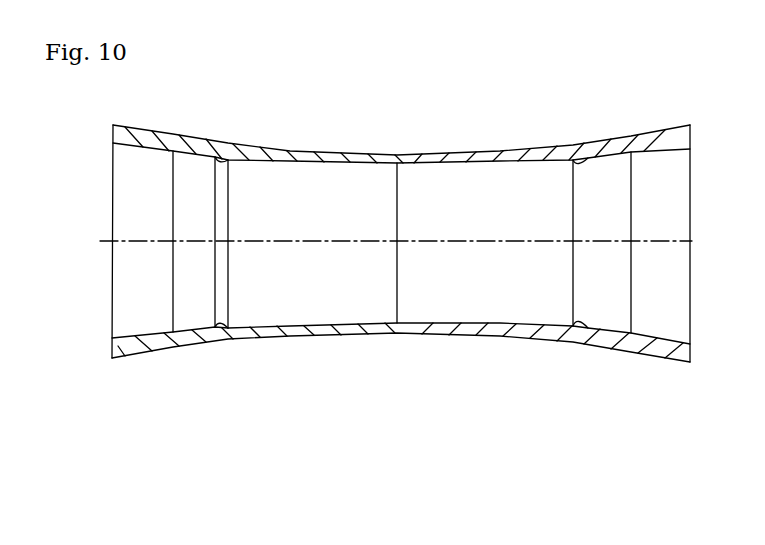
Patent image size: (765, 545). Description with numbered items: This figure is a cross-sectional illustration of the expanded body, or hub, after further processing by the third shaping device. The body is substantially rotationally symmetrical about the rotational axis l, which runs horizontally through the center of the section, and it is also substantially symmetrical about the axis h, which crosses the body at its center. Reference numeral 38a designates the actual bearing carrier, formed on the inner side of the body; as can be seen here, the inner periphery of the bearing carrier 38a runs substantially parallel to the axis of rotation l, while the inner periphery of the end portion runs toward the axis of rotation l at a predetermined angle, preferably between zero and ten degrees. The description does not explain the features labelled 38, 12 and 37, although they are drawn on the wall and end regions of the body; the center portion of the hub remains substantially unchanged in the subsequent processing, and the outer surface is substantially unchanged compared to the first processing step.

The rotational axis l is at (295, 222).
The axis of symmetry h is at (408, 212).
The roller wall 38 is at (664, 134).
The bearing carrier 38a is at (586, 158).
The roller end face 12 is at (688, 151).
The roller bottom wall at center 37 is at (397, 334).